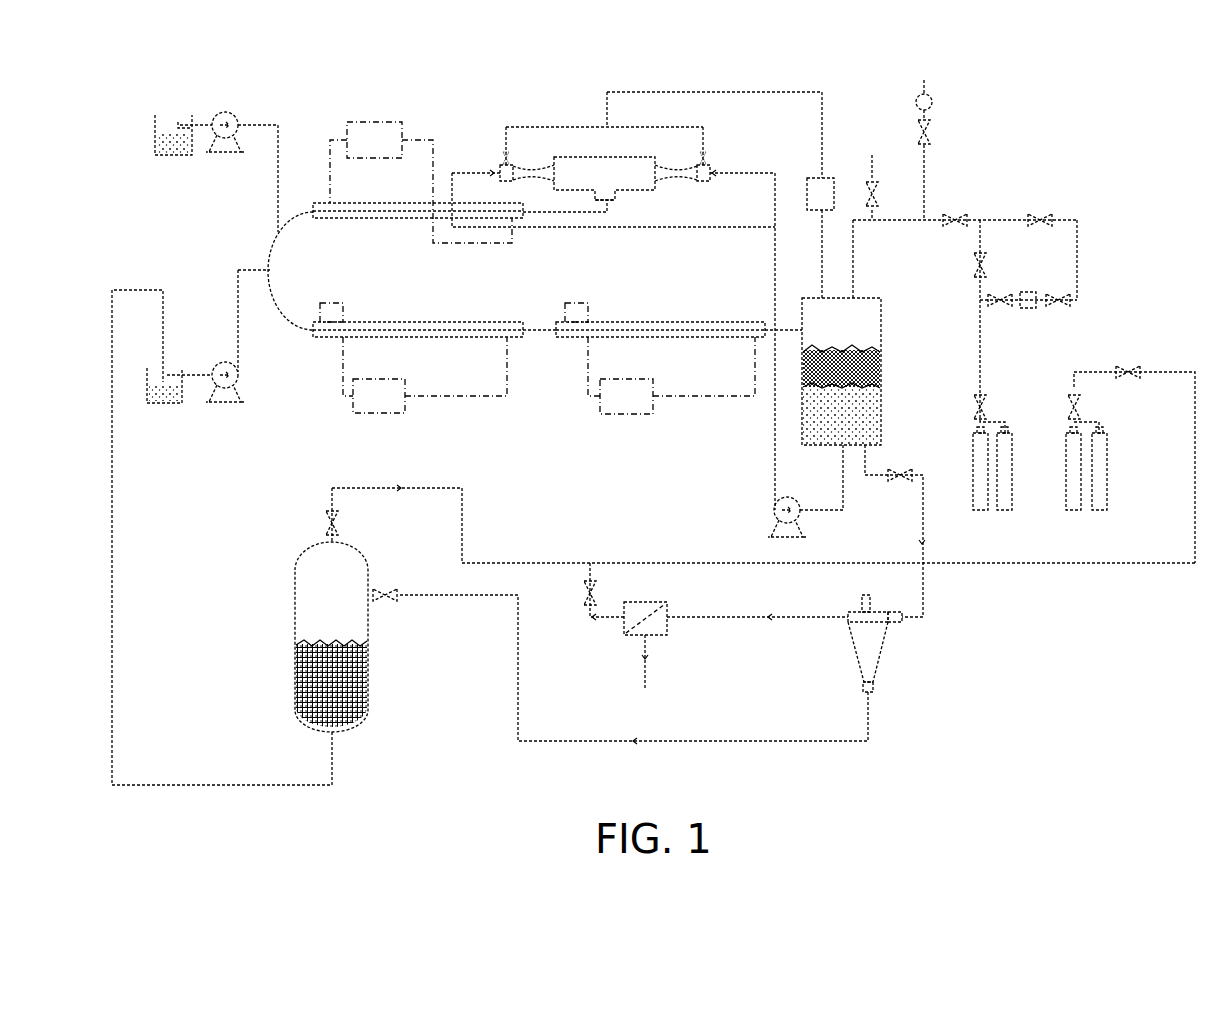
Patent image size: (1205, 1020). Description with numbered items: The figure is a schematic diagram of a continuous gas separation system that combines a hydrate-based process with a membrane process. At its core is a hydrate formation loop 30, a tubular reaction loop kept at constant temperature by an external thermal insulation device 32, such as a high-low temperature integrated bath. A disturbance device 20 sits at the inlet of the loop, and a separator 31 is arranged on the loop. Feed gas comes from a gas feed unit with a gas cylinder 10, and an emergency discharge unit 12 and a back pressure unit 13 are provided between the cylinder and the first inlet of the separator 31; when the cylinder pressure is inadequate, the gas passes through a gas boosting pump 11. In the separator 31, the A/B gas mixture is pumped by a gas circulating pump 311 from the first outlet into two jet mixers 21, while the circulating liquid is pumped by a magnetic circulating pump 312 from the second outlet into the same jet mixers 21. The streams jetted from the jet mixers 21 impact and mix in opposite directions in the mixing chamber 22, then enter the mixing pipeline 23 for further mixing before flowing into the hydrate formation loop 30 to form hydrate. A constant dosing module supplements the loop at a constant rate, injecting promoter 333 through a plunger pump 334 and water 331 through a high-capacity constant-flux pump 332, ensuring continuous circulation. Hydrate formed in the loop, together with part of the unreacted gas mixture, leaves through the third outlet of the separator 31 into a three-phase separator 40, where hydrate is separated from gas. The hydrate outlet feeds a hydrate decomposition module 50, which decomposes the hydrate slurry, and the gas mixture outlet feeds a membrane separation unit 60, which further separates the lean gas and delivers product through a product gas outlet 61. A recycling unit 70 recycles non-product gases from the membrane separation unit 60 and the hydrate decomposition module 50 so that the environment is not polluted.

The gas cylinder 10 is at (975, 447).
The gas boosting pump 11 is at (1028, 294).
The emergency discharge unit 12 is at (870, 160).
The back pressure unit 13 is at (926, 163).
The disturbance device 20 is at (595, 144).
The jet mixers 21 is at (660, 180).
The mixing chamber 22 is at (622, 167).
The mixing pipeline 23 is at (612, 198).
The hydrate formation loop 30 is at (268, 253).
The separator 31 is at (872, 335).
The thermal insulation device 32 is at (395, 412).
The gas circulating pump 311 is at (808, 183).
The magnetic circulating pump 312 is at (775, 518).
The water 331 is at (152, 373).
The high-capacity constant-flux pump 332 is at (240, 382).
The promoter 333 is at (165, 122).
The plunger pump 334 is at (245, 122).
The three-phase separator 40 is at (875, 665).
The hydrate decomposition module 50 is at (300, 600).
The membrane separation unit 60 is at (663, 612).
The product gas outlet 61 is at (650, 673).
The recycling unit 70 is at (1108, 465).